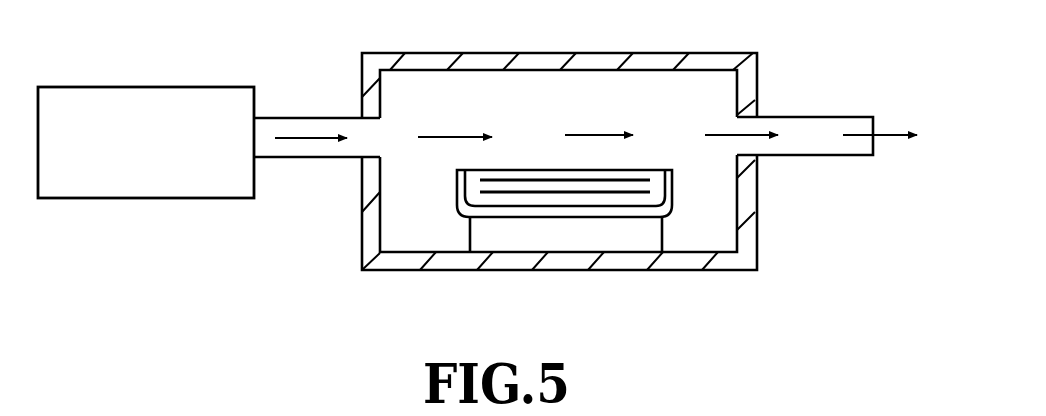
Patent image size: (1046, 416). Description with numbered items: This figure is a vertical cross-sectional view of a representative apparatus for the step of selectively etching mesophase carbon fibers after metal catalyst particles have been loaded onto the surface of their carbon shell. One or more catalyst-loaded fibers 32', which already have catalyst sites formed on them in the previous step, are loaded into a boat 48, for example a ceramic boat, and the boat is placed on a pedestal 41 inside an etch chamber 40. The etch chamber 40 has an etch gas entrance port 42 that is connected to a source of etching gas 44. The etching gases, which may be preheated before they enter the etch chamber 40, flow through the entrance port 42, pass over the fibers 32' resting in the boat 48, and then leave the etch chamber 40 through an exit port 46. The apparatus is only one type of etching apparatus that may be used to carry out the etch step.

The etch chamber 40 is at (668, 53).
The pedestal 41 is at (615, 232).
The etch gas entrance port 42 is at (299, 118).
The source of etching gas 44 is at (186, 88).
The exit port 46 is at (814, 117).
The boat 48 is at (670, 200).
The catalyst-loaded fibers 32' is at (565, 139).